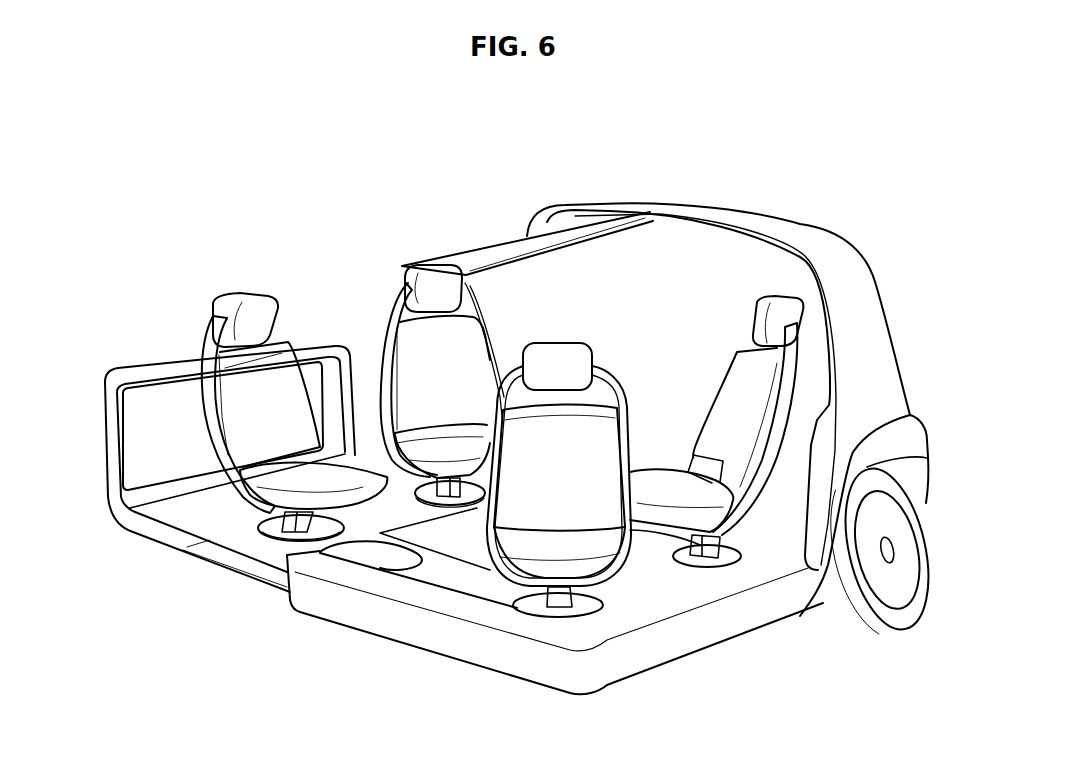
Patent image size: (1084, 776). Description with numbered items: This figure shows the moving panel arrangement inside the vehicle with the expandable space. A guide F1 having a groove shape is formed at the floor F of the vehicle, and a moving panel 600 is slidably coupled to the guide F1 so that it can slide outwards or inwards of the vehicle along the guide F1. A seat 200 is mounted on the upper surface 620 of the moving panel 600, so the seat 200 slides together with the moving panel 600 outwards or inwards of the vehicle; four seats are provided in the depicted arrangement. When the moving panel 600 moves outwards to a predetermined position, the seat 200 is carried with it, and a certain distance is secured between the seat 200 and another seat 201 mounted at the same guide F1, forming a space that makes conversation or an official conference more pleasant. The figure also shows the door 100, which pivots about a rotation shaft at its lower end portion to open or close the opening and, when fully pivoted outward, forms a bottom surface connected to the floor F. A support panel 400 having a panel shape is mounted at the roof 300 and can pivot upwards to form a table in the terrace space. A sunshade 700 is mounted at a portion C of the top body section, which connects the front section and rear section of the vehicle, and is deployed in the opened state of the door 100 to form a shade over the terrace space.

The door 100 is at (227, 557).
The seat 200 is at (260, 377).
The another seat 201 is at (583, 543).
The roof 300 is at (138, 378).
The support panel 400 is at (177, 393).
The moving panel 600 is at (362, 575).
The upper surface 620 is at (363, 553).
The sunshade 700 is at (462, 240).
The portion of top body section C is at (503, 247).
The floor F is at (690, 592).
The guide F1 is at (432, 597).